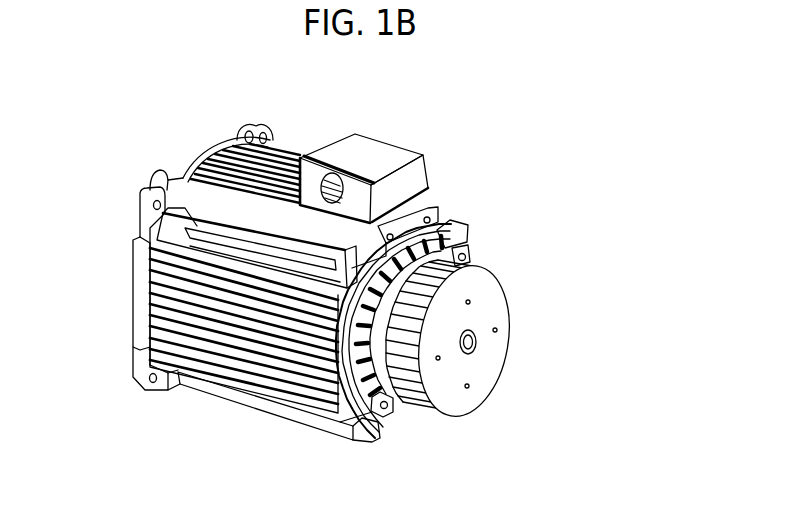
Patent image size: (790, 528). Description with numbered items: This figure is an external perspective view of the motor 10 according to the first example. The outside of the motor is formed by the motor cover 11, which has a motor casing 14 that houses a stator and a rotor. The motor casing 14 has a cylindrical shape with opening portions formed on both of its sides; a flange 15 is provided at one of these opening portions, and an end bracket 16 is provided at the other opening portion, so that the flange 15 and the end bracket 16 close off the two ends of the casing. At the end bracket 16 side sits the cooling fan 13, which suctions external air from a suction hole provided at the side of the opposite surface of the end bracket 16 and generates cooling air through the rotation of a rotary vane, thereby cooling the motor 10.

The motor 10 is at (450, 138).
The motor cover 11 is at (308, 433).
The cooling fan 13 is at (498, 305).
The motor casing 14 is at (263, 362).
The flange 15 is at (200, 152).
The end bracket 16 is at (425, 243).